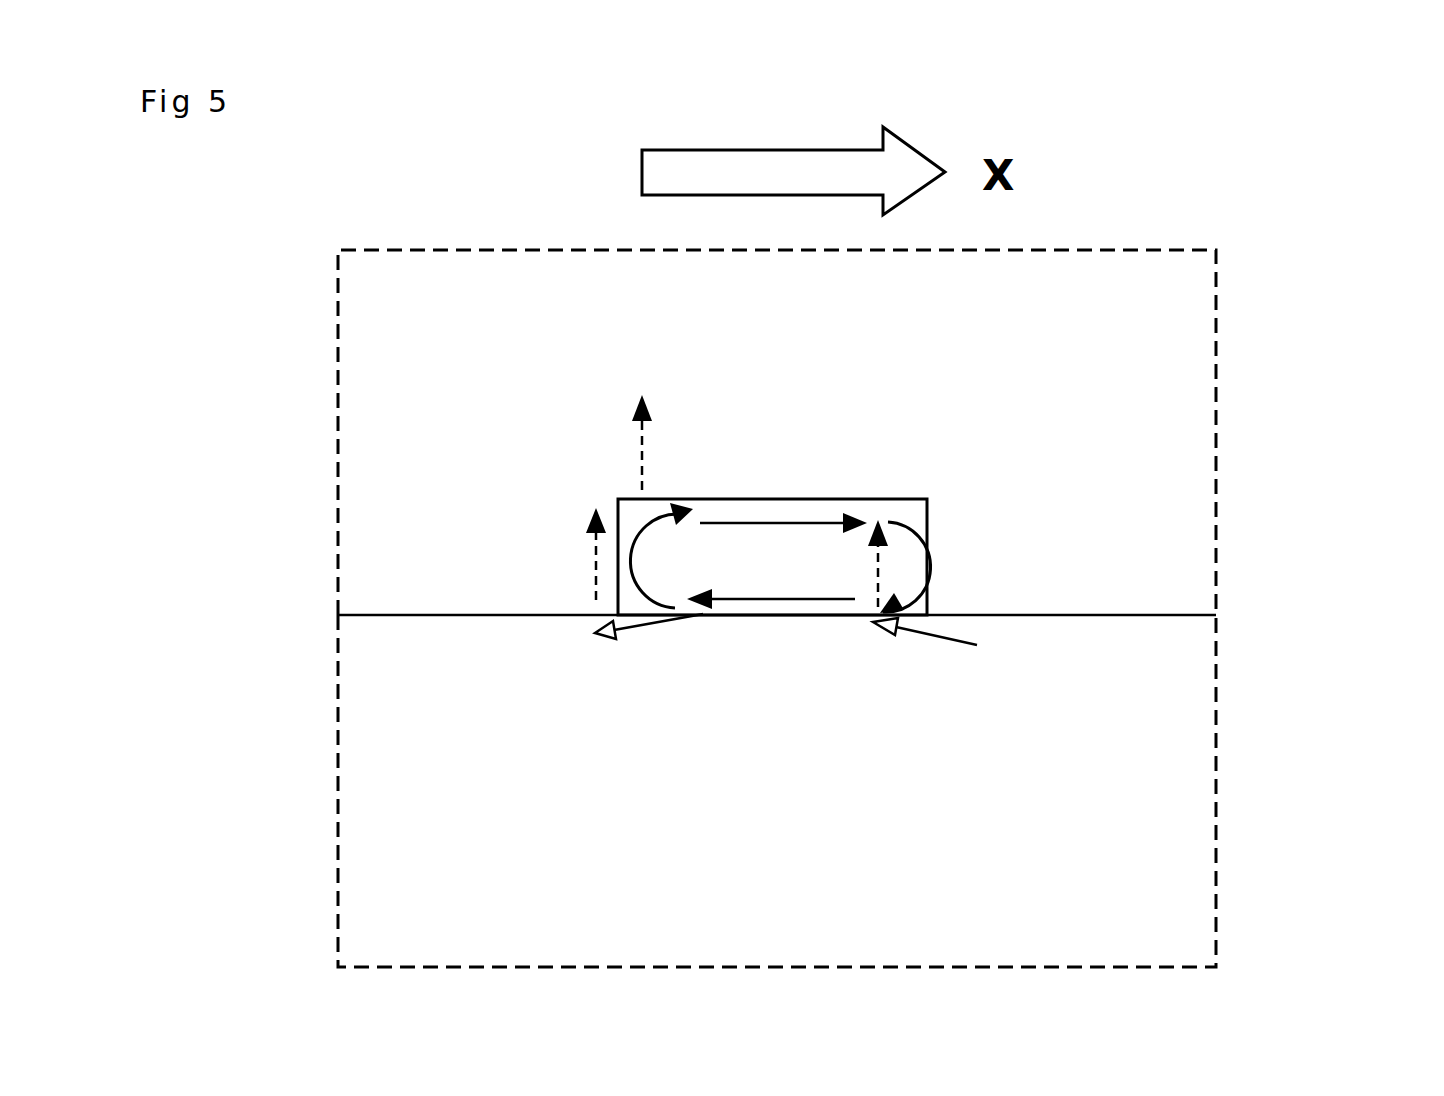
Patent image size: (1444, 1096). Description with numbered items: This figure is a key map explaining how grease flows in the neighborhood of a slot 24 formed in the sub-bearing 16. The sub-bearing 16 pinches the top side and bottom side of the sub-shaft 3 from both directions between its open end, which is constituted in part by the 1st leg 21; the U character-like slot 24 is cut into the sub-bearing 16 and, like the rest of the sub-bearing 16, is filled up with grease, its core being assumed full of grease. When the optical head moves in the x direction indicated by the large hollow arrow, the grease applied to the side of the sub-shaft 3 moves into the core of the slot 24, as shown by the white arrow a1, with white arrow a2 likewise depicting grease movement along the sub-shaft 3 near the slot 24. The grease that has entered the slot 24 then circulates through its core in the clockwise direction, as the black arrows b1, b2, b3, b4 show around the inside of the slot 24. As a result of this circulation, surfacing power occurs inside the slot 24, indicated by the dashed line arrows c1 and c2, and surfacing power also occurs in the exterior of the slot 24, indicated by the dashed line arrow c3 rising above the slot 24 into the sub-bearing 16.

The sub-bearing 16 is at (1192, 341).
The 1st leg 21 is at (382, 420).
The slot 24 is at (928, 522).
The sub-shaft 3 is at (1177, 779).
The white arrow a1 is at (925, 646).
The white arrow a2 is at (649, 644).
The black arrow b1 is at (771, 627).
The black arrow b2 is at (669, 555).
The black arrow b3 is at (783, 496).
The black arrow b4 is at (936, 567).
The dashed line arrow c1 is at (850, 563).
The dashed line arrow c2 is at (570, 554).
The dashed line arrow c3 is at (619, 442).